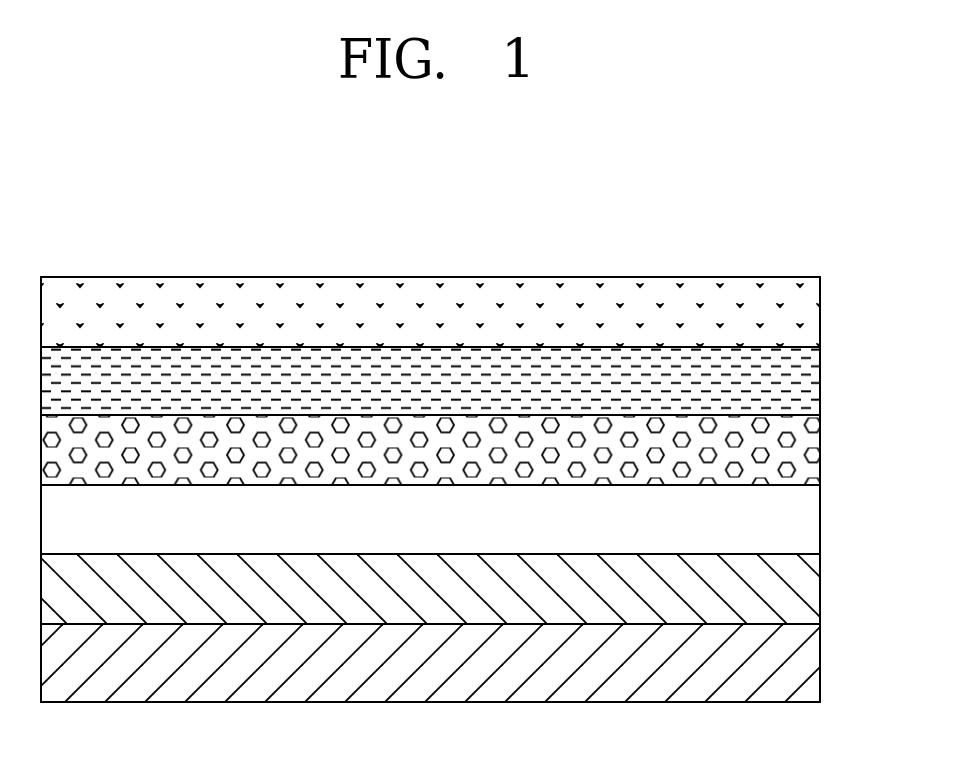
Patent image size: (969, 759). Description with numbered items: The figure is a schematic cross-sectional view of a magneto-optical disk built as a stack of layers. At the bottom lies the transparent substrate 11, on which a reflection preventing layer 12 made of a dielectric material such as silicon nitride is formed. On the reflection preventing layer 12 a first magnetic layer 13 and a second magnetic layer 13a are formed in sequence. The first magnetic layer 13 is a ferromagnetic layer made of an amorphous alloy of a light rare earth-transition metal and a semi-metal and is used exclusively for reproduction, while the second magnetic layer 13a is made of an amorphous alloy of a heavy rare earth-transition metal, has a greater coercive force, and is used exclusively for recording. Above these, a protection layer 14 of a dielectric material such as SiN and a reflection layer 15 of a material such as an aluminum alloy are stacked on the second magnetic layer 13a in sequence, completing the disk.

The transparent substrate 11 is at (810, 668).
The reflection preventing layer 12 is at (807, 592).
The first magnetic layer 13 is at (807, 523).
The second magnetic layer 13a is at (810, 453).
The protection layer 14 is at (820, 385).
The reflection layer 15 is at (807, 315).